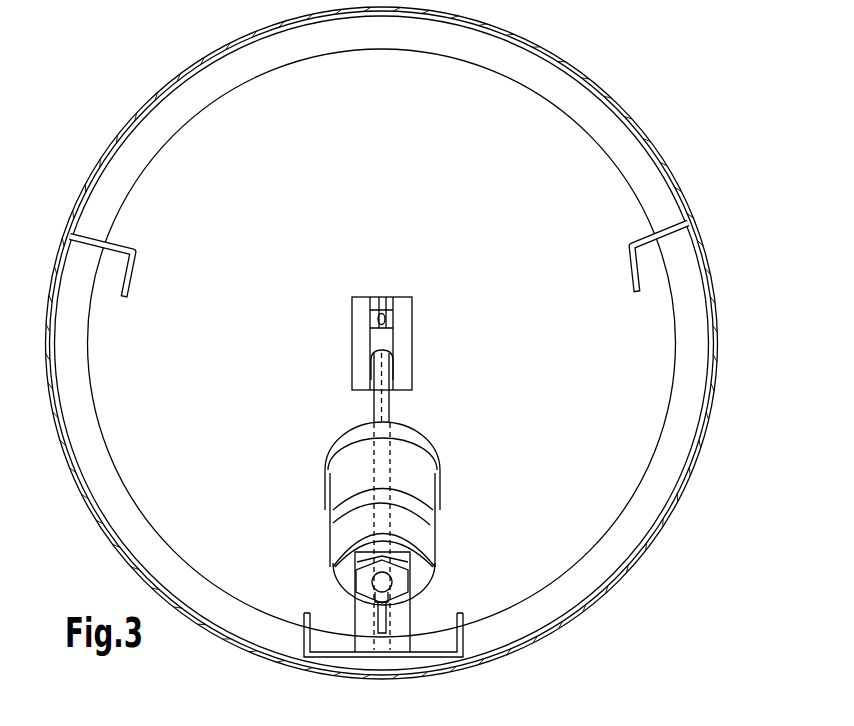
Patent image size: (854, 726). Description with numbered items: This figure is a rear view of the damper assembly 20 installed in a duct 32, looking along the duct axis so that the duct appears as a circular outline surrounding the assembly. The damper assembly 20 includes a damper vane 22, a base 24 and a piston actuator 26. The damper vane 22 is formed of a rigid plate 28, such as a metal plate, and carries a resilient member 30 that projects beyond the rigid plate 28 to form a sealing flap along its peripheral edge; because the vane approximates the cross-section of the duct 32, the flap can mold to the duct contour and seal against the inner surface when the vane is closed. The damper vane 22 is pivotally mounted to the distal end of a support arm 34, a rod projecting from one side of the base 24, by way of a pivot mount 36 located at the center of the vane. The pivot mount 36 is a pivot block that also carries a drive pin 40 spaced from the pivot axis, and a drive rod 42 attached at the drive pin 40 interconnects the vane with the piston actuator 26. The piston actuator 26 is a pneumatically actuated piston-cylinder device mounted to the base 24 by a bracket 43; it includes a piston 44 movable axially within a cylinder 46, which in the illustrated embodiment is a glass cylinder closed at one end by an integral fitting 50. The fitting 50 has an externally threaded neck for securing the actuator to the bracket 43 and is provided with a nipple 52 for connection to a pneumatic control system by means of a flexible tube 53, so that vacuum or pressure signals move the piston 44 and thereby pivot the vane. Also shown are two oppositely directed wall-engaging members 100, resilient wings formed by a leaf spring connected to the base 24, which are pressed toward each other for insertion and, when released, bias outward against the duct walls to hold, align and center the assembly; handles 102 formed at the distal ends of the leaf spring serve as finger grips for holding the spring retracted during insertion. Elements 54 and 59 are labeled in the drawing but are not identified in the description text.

The damper assembly 20 is at (672, 120).
The damper vane 22 is at (630, 478).
The base 24 is at (465, 636).
The piston actuator 26 is at (302, 515).
The rigid plate 28 is at (647, 373).
The resilient member 30 is at (678, 428).
The duct 32 is at (683, 186).
The support arm 34 is at (388, 405).
The pivot mount 36 is at (400, 320).
The drive pin 40 is at (387, 308).
The drive rod 42 is at (384, 383).
The bracket 43 is at (405, 618).
The piston 44 is at (414, 497).
The cylinder 46 is at (433, 553).
The integral fitting 50 is at (345, 573).
The nipple 52 is at (374, 596).
The flexible tube 53 is at (388, 622).
The canister cap 54 is at (428, 436).
The retaining pin 59 is at (380, 312).
The wall-engaging members 100 is at (710, 297).
The handles 102 is at (140, 270).